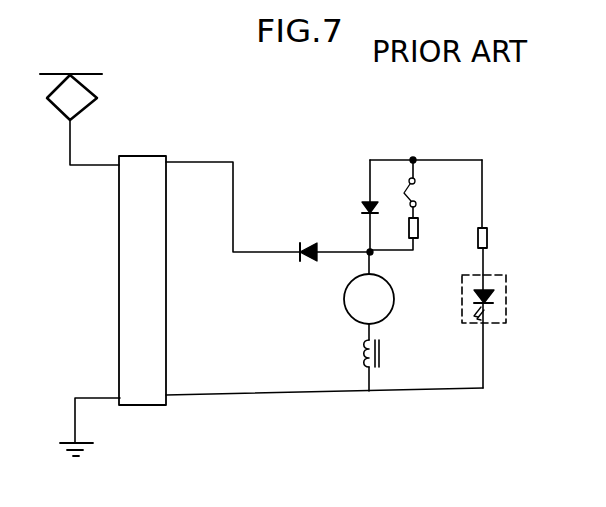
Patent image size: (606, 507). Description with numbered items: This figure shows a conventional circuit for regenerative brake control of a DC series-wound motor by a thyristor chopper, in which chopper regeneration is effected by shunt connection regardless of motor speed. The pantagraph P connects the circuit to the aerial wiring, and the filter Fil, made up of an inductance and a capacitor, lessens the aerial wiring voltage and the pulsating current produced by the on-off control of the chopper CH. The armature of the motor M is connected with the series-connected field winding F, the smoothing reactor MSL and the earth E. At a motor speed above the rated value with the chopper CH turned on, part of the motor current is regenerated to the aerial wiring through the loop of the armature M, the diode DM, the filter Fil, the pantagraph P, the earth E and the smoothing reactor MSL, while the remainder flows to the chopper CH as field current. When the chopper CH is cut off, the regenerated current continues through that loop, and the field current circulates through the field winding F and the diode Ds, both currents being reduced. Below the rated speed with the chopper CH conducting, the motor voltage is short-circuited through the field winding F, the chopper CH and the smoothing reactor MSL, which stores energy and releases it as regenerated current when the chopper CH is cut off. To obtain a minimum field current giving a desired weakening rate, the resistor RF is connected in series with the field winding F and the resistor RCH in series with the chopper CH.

The pantagraph P is at (62, 114).
The filter Fil is at (143, 163).
The earth E is at (63, 447).
The diode DM is at (305, 262).
The diode Ds is at (360, 207).
The series-connected field winding F is at (418, 188).
The resistor RF is at (420, 228).
The resistor RCH is at (489, 238).
The chopper CH is at (551, 318).
The armature of the motor M is at (369, 288).
The smoothing reactor MSL is at (363, 352).